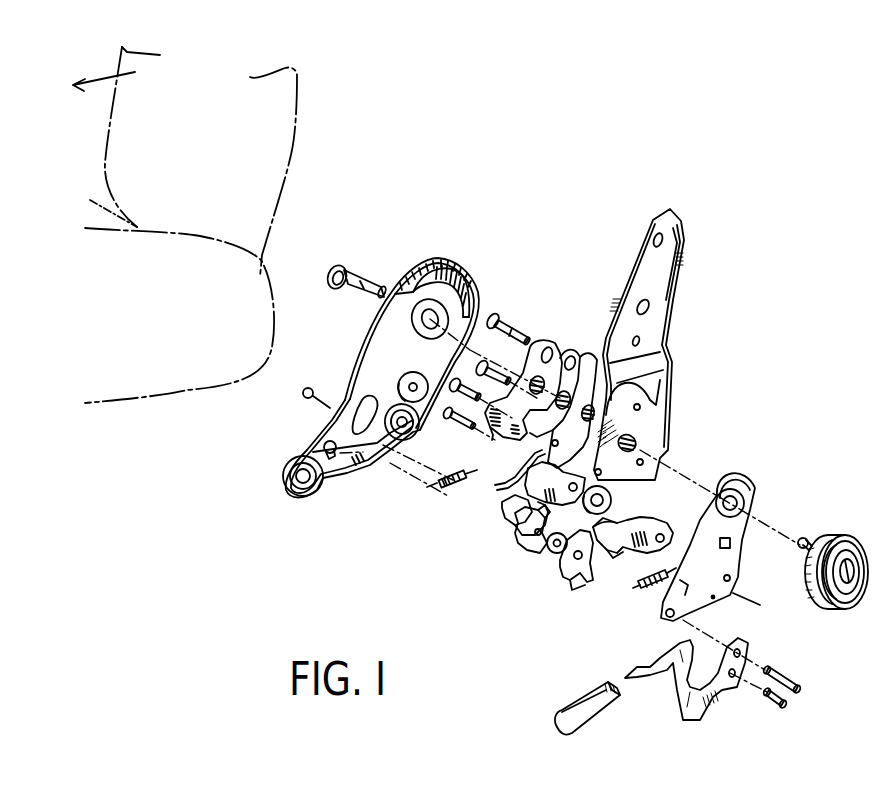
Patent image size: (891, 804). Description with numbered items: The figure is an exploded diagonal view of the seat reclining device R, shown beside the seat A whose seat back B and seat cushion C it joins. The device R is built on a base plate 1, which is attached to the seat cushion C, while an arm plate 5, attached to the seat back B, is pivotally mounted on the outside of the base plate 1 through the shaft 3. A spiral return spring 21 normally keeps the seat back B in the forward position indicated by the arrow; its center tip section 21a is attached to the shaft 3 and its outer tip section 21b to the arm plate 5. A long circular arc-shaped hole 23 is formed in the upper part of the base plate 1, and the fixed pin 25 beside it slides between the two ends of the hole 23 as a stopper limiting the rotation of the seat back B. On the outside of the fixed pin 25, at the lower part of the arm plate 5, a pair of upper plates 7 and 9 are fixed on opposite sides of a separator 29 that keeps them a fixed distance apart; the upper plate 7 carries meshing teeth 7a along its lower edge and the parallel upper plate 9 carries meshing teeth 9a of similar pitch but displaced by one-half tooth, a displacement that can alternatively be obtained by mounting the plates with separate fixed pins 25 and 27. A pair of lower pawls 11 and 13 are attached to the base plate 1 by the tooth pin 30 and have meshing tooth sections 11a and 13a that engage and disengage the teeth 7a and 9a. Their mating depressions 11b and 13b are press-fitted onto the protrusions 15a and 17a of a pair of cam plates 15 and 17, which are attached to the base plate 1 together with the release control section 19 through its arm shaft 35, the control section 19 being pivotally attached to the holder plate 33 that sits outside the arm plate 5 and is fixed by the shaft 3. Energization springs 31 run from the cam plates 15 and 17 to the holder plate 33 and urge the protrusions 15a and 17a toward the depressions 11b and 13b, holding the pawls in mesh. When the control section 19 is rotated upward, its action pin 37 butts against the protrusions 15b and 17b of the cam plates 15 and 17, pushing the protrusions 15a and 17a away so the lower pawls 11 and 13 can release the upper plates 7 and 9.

The base plate 1 is at (342, 472).
The shaft 3 is at (349, 262).
The arm plate 5 is at (668, 290).
The upper plate 7 is at (508, 381).
The meshing tooth section 7a is at (505, 438).
The upper plate 9 is at (545, 404).
The meshing tooth section 9a is at (527, 458).
The lower pawl 11 is at (517, 487).
The meshing tooth section 11a is at (508, 497).
The mating depression 11b is at (512, 522).
The lower pawl 13 is at (649, 534).
The meshing tooth section 13a is at (632, 522).
The mating depression 13b is at (598, 556).
The cam plate 15 is at (536, 550).
The protrusion 15a is at (540, 505).
The protrusion 15b is at (522, 545).
The cam plate 17 is at (590, 558).
The protrusion 17a is at (605, 501).
The protrusion 17b is at (568, 577).
The release control section 19 is at (703, 729).
The return spring 21 is at (817, 570).
The center tip section 21a is at (840, 588).
The outer tip section 21b is at (803, 538).
The long circular arc-shaped hole 23 is at (452, 280).
The fixed pin 25 is at (494, 314).
The fixed pin 27 is at (414, 394).
The separator 29 is at (578, 350).
The tooth pin 30 is at (458, 425).
The energization spring 31 is at (458, 490).
The holder plate 33 is at (740, 540).
The arm shaft 35 is at (787, 673).
The action pin 37 is at (767, 702).
The seat A is at (94, 180).
The seat back B is at (287, 150).
The seat cushion C is at (188, 387).
The seat reclining device R is at (417, 221).